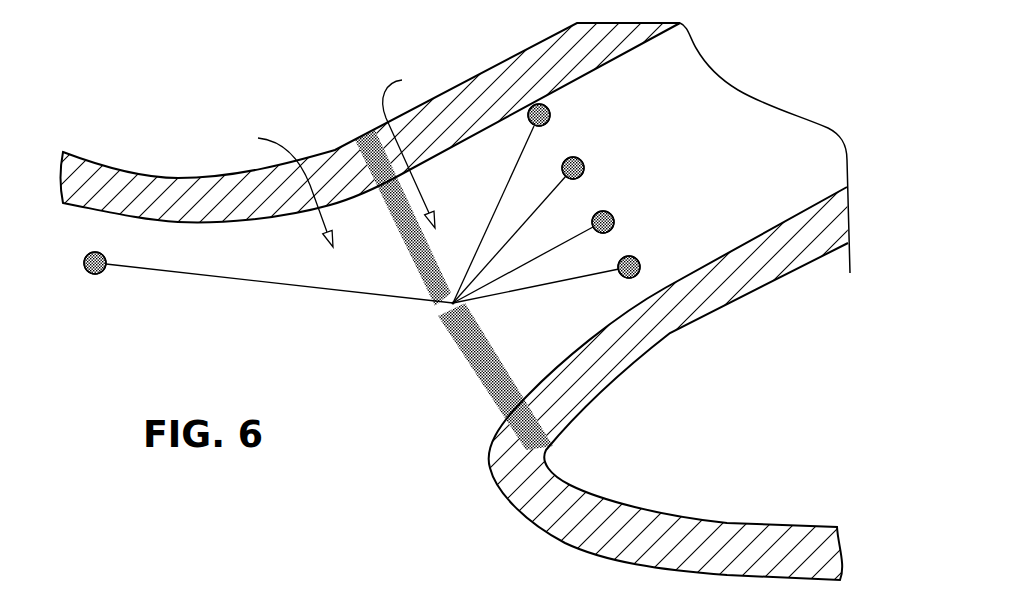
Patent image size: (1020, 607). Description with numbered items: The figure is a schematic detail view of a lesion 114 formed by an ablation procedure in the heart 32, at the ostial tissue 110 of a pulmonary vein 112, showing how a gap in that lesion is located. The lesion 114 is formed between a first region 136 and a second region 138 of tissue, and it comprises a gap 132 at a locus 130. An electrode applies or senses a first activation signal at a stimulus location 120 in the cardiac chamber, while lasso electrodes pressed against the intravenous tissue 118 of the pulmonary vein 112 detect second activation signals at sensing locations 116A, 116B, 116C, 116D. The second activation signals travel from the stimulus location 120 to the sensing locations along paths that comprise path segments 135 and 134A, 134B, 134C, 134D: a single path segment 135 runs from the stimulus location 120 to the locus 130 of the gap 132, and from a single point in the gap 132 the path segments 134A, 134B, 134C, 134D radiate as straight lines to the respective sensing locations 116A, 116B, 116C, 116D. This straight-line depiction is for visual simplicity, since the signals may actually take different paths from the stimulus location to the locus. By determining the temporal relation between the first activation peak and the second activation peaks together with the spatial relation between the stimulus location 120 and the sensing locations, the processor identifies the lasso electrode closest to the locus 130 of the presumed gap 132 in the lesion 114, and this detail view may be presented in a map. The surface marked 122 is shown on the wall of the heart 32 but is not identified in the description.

The heart 32 is at (112, 163).
The pulmonary vein 112 is at (649, 355).
The ostial tissue 110 is at (383, 198).
The lesion 114 is at (405, 244).
The intravenous tissue 118 is at (738, 226).
The surface of first wall 122 is at (78, 208).
The stimulus location 120 is at (99, 274).
The sensing location 116A is at (547, 111).
The sensing location 116B is at (573, 157).
The sensing location 116C is at (614, 220).
The sensing location 116D is at (644, 263).
The locus 130 is at (426, 328).
The gap 132 is at (461, 306).
The path segment 134A is at (496, 202).
The path segment 134B is at (540, 210).
The path segment 134C is at (562, 246).
The path segment 134D is at (591, 277).
The path segment 135 is at (278, 284).
The first region 136 is at (277, 186).
The second region 138 is at (411, 150).